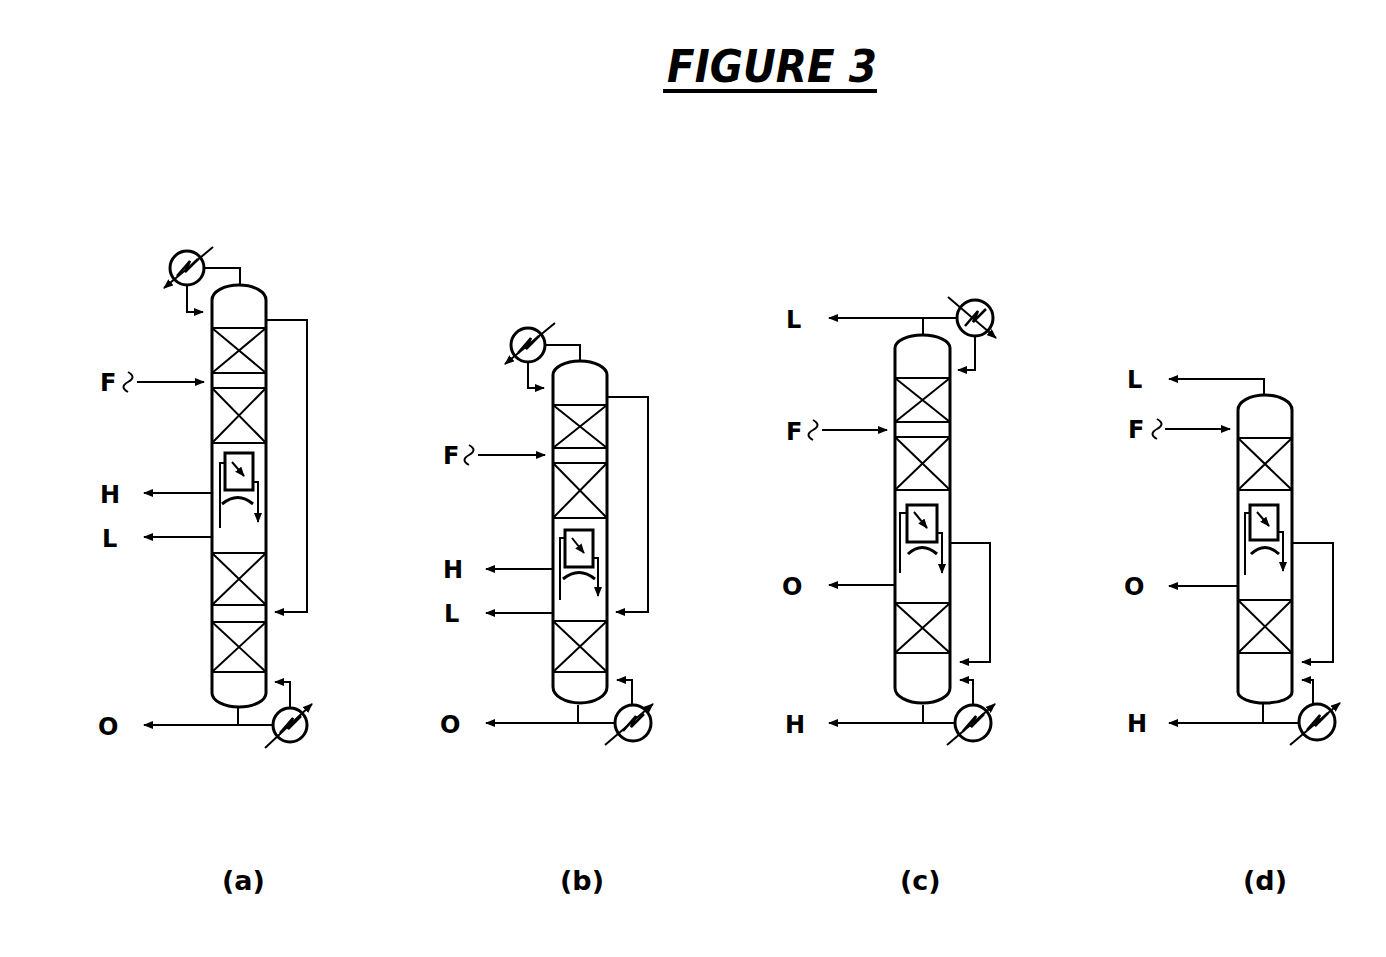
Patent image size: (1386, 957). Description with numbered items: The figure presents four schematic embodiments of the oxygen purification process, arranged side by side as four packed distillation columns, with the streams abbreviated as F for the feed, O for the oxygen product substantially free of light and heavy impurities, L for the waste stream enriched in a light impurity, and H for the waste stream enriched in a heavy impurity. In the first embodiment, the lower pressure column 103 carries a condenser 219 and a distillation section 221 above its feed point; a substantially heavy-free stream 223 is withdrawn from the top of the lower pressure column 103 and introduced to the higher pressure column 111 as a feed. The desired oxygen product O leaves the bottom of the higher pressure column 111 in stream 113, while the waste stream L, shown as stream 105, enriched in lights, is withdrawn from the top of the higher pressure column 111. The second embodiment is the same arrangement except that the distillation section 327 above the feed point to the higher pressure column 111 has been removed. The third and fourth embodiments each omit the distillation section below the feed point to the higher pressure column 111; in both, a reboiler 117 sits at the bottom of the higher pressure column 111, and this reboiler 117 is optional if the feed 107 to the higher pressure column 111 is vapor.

The lower pressure column 103 is at (268, 297).
The condenser 219 is at (177, 253).
The distillation section 221 is at (222, 353).
The substantially heavy-free stream 223 is at (307, 422).
The waste stream L 105 is at (187, 539).
The distillation section 327 is at (222, 580).
The higher pressure column 111 is at (268, 638).
The stream 113 is at (178, 727).
The feed 107 is at (990, 612).
The reboiler 117 is at (981, 740).